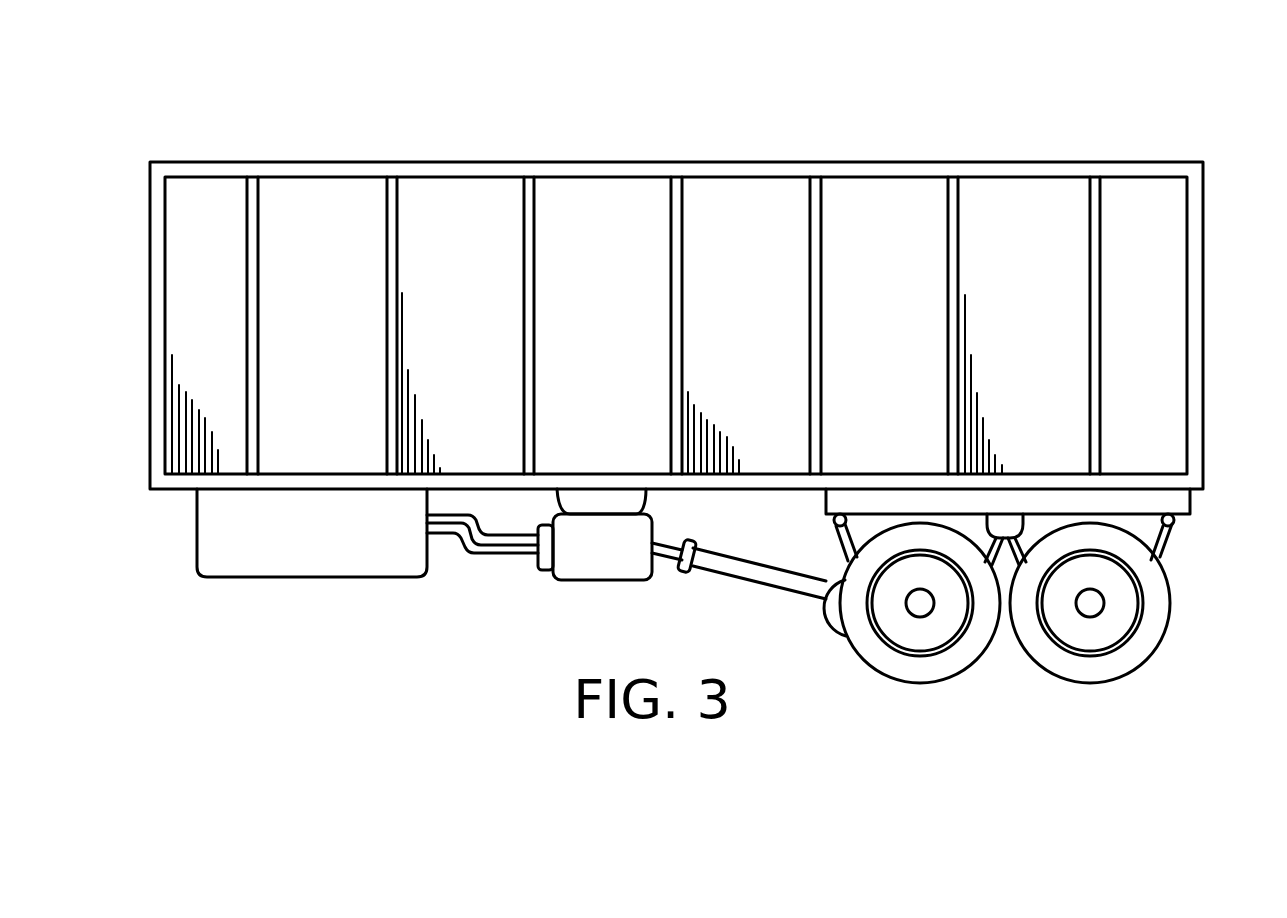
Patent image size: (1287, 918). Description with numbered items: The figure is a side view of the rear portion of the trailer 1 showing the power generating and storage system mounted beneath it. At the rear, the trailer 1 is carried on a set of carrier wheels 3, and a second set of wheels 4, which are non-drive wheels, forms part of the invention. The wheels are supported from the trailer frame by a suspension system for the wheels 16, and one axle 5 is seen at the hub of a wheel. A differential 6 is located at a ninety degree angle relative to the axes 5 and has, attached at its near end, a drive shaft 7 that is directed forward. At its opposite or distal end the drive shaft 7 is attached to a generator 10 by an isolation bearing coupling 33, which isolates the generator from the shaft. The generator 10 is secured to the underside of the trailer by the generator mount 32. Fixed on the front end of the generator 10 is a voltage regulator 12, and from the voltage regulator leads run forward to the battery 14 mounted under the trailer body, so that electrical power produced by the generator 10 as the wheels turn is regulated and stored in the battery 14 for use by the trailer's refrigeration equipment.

The trailer 1 is at (1202, 116).
The carrier wheels 3 is at (1140, 642).
The second set of wheels 4 is at (902, 660).
The axle 5 is at (922, 600).
The differential 6 is at (835, 607).
The drive shaft 7 is at (767, 578).
The generator 10 is at (585, 562).
The voltage regulator 12 is at (545, 525).
The battery 14 is at (298, 552).
The suspension system for the wheels 16 is at (848, 537).
The generator mount 32 is at (615, 504).
The isolation bearing coupling 33 is at (667, 552).